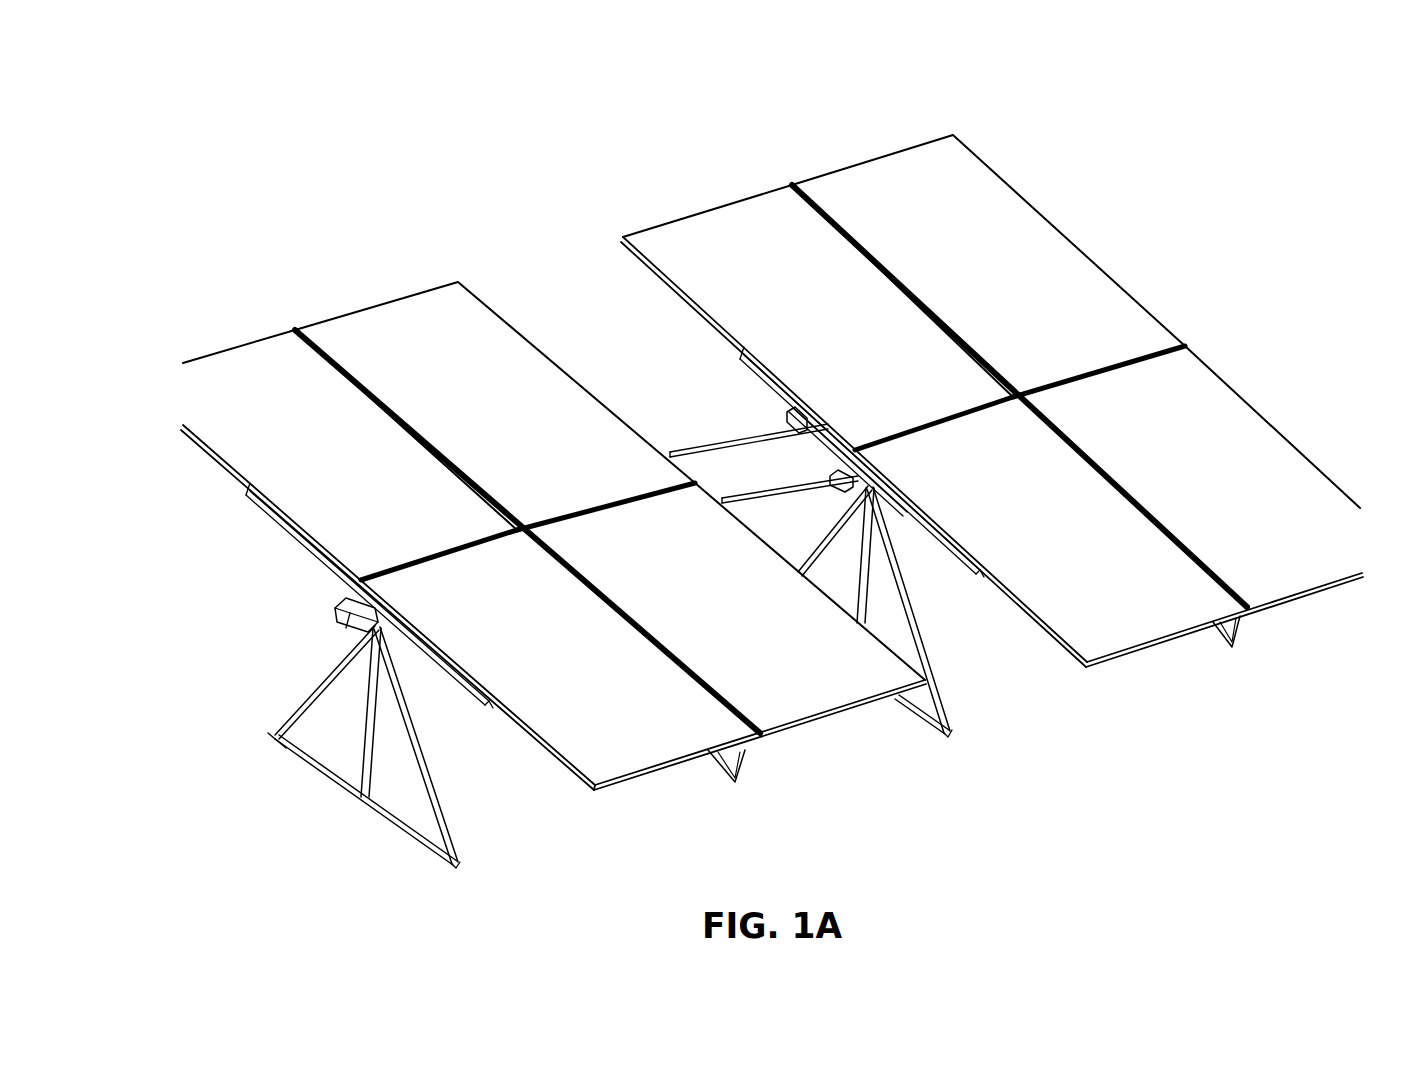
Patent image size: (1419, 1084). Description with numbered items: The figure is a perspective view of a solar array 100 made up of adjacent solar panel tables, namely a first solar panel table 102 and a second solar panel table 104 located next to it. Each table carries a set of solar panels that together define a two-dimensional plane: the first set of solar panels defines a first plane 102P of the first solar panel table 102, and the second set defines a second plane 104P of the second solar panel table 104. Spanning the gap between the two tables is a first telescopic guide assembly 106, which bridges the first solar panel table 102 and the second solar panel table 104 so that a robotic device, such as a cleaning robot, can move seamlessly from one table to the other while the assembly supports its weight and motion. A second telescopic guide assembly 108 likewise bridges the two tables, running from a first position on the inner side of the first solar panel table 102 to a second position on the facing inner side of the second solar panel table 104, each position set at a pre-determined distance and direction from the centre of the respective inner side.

The solar array 100 is at (1256, 102).
The first solar panel table 102 is at (232, 448).
The first plane 102P is at (366, 337).
The second solar panel table 104 is at (1120, 308).
The second plane 104P is at (908, 179).
The first telescopic guide assembly 106 is at (736, 430).
The second telescopic guide assembly 108 is at (764, 520).